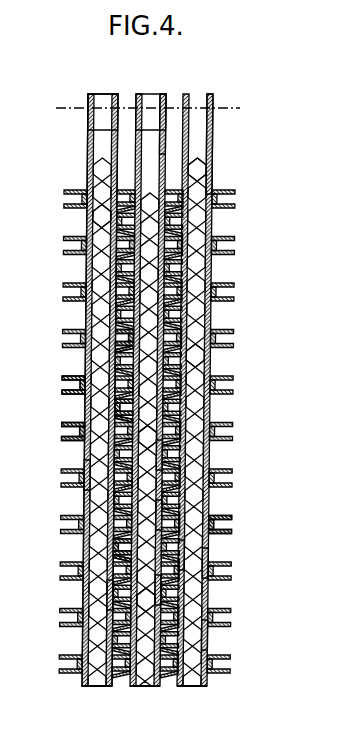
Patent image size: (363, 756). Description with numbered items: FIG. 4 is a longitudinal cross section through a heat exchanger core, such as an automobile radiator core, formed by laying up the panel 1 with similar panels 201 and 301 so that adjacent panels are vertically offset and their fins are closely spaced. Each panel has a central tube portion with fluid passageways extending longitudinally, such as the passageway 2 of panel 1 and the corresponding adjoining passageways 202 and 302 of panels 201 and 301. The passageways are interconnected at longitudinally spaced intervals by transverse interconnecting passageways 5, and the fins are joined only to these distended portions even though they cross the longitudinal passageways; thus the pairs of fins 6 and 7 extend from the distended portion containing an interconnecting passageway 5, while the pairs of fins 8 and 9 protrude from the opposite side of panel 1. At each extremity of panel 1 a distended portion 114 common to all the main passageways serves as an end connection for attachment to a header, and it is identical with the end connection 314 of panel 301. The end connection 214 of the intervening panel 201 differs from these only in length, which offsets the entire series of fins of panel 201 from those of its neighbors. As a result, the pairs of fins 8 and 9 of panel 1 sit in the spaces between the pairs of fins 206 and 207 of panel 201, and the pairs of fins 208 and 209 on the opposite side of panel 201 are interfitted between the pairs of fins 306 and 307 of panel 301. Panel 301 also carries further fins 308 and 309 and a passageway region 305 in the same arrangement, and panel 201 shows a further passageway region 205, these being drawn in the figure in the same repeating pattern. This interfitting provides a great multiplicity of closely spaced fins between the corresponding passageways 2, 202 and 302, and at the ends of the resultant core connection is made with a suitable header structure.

The distended portion 114 is at (100, 98).
The end connection 214 is at (149, 100).
The panel 201 is at (165, 130).
The panel 1 is at (88, 164).
The fluid passageway 2 is at (100, 221).
The end connection 314 is at (197, 148).
The panel 301 is at (212, 179).
The fin 8 is at (120, 338).
The fin 6 is at (82, 373).
The fluid passageway 302 is at (190, 362).
The fin 9 is at (118, 407).
The fin 7 is at (78, 440).
The interconnecting passageway 5 is at (94, 476).
The fluid passageway 202 is at (150, 432).
The fin 208 is at (160, 457).
The fin 209 is at (157, 512).
The fin 309 is at (214, 532).
The fin 207 is at (120, 547).
The fin 306 is at (187, 552).
The tube wall 308 is at (207, 561).
The fin 206 is at (112, 593).
The fin 307 is at (167, 588).
The core 205 is at (145, 597).
The tube wall 305 is at (205, 635).